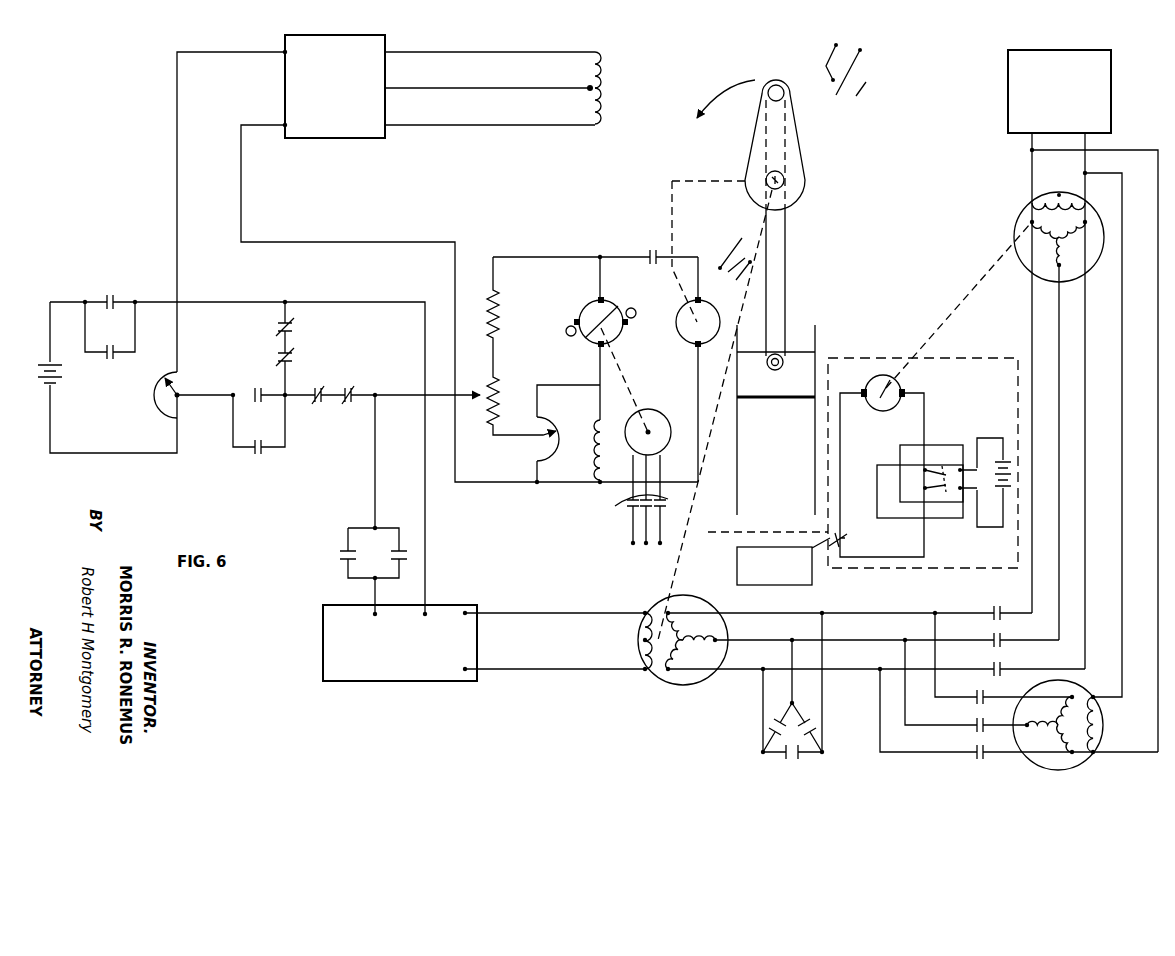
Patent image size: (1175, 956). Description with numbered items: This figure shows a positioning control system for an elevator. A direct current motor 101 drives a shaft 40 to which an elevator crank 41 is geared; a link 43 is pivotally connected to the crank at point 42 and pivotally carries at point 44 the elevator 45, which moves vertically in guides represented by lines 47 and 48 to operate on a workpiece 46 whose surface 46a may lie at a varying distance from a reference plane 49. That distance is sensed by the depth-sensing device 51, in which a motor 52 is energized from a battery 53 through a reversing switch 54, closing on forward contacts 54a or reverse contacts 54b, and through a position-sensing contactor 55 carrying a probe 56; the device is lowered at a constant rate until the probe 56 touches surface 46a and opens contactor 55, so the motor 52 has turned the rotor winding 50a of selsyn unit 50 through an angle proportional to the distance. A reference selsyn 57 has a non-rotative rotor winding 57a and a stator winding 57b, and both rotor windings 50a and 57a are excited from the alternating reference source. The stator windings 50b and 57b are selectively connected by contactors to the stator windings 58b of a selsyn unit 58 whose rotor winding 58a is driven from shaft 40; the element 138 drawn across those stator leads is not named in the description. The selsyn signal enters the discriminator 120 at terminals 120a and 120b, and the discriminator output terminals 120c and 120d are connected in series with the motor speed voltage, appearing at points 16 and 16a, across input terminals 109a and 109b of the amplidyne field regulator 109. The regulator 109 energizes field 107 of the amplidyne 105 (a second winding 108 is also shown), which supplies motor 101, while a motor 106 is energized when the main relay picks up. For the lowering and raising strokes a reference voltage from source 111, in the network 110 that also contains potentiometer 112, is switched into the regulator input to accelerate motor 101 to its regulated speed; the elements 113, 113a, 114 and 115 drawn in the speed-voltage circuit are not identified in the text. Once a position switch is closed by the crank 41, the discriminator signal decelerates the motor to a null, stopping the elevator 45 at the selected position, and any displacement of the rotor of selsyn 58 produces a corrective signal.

The potentiometer 16 is at (484, 403).
The potentiometer terminal 16a is at (537, 490).
The shaft 40 is at (786, 180).
The elevator crank 41 is at (806, 150).
The pivot point 42 is at (779, 85).
The link 43 is at (786, 258).
The pivot point 44 is at (781, 355).
The elevator 45 is at (776, 374).
The workpiece 46 is at (812, 583).
The surface 46a is at (737, 547).
The guide 47 is at (737, 432).
The guide 48 is at (815, 455).
The reference plane 49 is at (772, 531).
The selsyn unit 50 is at (1014, 234).
The rotor winding 50a is at (1060, 194).
The stator windings 50b is at (1058, 239).
The depth-sensing device 51 is at (900, 358).
The motor 52 is at (876, 409).
The battery 53 is at (1003, 438).
The reversing switch 54 is at (927, 481).
The forward contacts 54a is at (922, 470).
The reverse contacts 54b is at (956, 464).
The position-sensing contactor 55 is at (850, 540).
The probe 56 is at (814, 548).
The reference selsyn 57 is at (1028, 760).
The rotor winding 57a is at (1097, 723).
The stator winding 57b is at (1049, 724).
The selsyn unit 58 is at (690, 685).
The rotor winding 58a is at (644, 664).
The stator windings 58b is at (690, 628).
The motor 101 is at (682, 338).
The amplidyne 105 is at (614, 310).
The motor 106 is at (655, 416).
The field 107 is at (601, 68).
The field winding 108 is at (601, 101).
The amplidyne field regulator 109 is at (344, 139).
The regulator input terminal 109a is at (283, 50).
The regulator input terminal 109b is at (285, 136).
The bridge circuit 110 is at (113, 377).
The reference voltage source 111 is at (32, 373).
The potentiometer 112 is at (180, 404).
The switch 113 is at (548, 420).
The switch contact 113a is at (535, 448).
The inductor 114 is at (592, 454).
The network 115 is at (534, 339).
The discriminator 120 is at (323, 654).
The discriminator output 120a is at (467, 616).
The discriminator output 120b is at (466, 672).
The discriminator output terminal 120c is at (372, 611).
The discriminator output terminal 120d is at (428, 611).
The capacitor network 138 is at (792, 697).